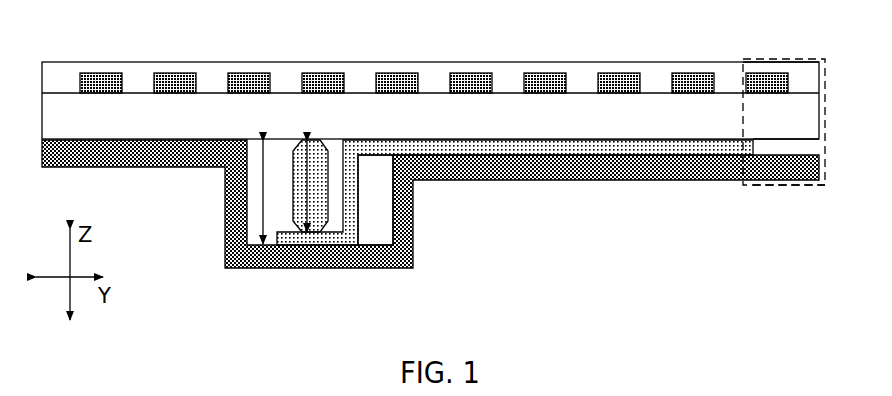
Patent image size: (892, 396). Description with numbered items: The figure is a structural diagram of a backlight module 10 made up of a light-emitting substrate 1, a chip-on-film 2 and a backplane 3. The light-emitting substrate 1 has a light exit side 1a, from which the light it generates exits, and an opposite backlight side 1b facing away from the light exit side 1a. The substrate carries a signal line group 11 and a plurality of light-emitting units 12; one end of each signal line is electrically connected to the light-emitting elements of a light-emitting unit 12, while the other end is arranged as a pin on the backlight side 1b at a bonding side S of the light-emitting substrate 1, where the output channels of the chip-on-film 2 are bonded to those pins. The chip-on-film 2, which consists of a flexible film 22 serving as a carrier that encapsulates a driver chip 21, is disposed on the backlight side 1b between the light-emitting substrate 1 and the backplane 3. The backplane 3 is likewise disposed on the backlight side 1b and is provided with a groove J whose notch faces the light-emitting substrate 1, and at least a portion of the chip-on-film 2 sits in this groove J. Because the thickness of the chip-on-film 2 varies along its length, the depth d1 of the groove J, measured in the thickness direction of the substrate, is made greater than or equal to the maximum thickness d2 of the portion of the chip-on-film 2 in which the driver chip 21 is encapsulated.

The backlight module 10 is at (40, 35).
The light-emitting substrate 1 is at (826, 62).
The light exit side 1a is at (775, 47).
The backlight side 1b is at (801, 144).
The signal line group 11 is at (347, 113).
The light-emitting units 12 is at (697, 75).
The chip-on-film 2 is at (492, 230).
The driver chip 21 is at (318, 187).
The flexible film 22 is at (462, 148).
The backplane 3 is at (808, 173).
The bonding side S is at (763, 187).
The groove J is at (373, 228).
The depth of the groove d1 is at (263, 173).
The maximum thickness of the portion of the chip-on-film in which the driver chip is d2 is at (307, 200).